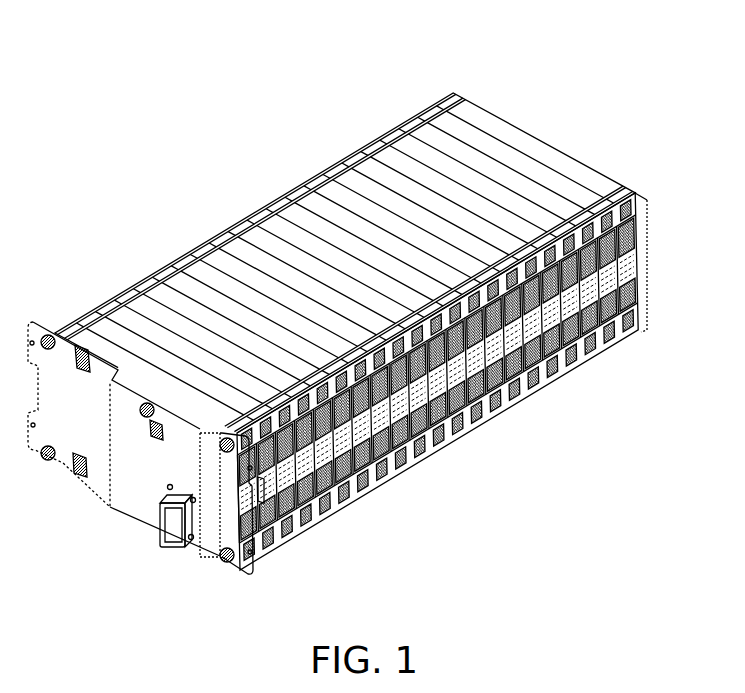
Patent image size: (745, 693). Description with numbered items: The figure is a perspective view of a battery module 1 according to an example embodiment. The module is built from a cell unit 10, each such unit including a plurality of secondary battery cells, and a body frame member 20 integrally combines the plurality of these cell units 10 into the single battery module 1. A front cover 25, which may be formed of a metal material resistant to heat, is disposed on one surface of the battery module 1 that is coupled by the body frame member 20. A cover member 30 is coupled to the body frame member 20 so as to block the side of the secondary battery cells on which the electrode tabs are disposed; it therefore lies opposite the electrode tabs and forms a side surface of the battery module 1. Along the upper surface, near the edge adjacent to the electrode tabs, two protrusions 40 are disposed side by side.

The battery module 1 is at (306, 44).
The cell unit 10 is at (522, 150).
The body frame member 20 is at (223, 557).
The front cover 25 is at (133, 493).
The cover member 30 is at (633, 273).
The protrusion 40 is at (620, 193).